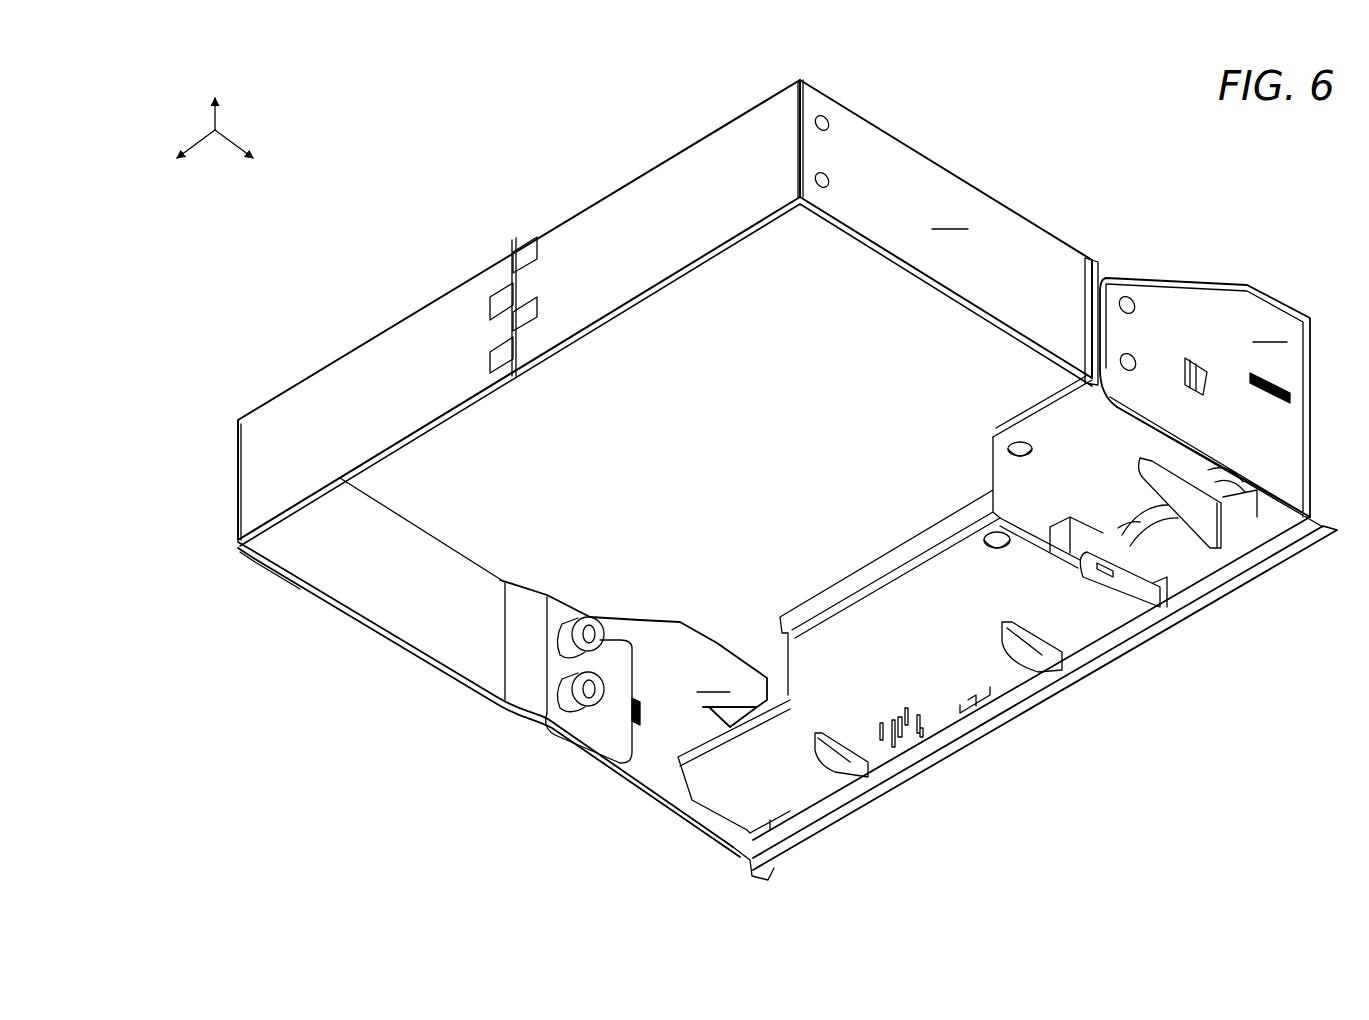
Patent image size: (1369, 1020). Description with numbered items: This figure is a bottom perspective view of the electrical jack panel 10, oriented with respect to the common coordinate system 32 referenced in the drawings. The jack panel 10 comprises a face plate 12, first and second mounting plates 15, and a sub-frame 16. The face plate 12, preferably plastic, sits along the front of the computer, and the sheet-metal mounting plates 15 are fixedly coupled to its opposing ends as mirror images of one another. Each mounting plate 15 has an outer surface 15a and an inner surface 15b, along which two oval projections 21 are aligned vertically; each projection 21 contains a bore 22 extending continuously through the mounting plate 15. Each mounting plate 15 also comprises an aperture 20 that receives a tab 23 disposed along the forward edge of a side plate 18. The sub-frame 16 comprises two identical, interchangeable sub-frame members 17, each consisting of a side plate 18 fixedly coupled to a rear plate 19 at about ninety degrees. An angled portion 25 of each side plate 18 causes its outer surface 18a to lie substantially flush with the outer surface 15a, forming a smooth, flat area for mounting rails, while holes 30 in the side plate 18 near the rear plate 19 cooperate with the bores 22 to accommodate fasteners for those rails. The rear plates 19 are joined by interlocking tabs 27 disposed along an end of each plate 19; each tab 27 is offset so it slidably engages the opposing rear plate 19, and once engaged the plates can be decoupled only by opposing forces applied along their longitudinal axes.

The jack panel 10 is at (361, 738).
The face plate 12 is at (847, 820).
The mounting plate 15 is at (911, 498).
The outer surface 15a is at (1211, 402).
The inner surface 15b is at (712, 603).
The sub-frame 16 is at (392, 326).
The sub-frame member 17 is at (849, 244).
The side plate 18 is at (931, 152).
The outer surface 18a is at (952, 218).
The rear plate 19 is at (658, 306).
The aperture 20 is at (1189, 360).
The projection 21 is at (590, 668).
The bore 22 is at (1133, 300).
The tab 23 is at (1206, 388).
The angled portion 25 is at (1078, 262).
The interlocking tab 27 is at (521, 246).
The hole 30 is at (828, 126).
The coordinate system 32 is at (228, 118).